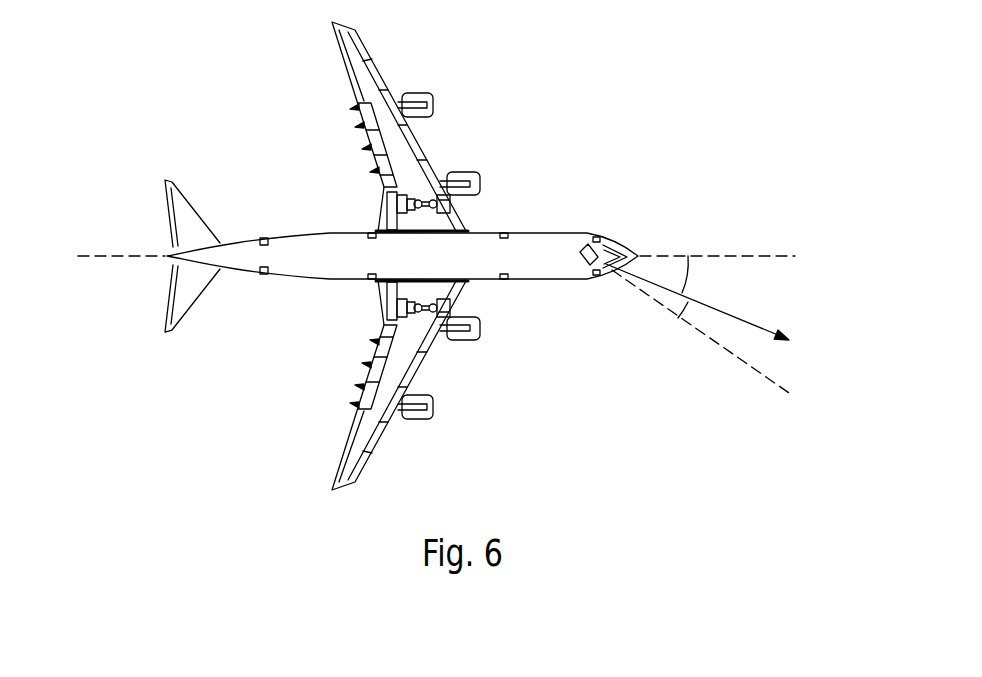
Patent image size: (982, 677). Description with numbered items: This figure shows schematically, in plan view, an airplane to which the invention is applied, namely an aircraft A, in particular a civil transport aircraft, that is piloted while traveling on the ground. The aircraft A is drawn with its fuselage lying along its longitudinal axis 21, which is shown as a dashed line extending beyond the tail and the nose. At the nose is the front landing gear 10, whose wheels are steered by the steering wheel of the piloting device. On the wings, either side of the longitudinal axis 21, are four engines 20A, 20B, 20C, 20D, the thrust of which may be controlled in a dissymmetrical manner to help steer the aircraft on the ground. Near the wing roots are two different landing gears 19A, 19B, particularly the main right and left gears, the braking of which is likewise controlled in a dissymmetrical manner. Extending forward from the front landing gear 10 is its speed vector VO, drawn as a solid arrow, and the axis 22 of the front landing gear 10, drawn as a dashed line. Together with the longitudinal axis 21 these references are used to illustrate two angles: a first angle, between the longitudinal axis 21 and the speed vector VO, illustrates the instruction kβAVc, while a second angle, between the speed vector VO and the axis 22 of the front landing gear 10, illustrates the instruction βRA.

The aircraft A is at (317, 280).
The front landing gear 10 is at (606, 236).
The landing gear 19A is at (383, 206).
The landing gear 19B is at (384, 306).
The engine 20A is at (417, 93).
The engine 20B is at (470, 172).
The engine 20C is at (463, 340).
The engine 20D is at (418, 419).
The longitudinal axis 21 is at (760, 256).
The axis of the front landing gear 22 is at (748, 368).
The speed vector VO is at (753, 320).